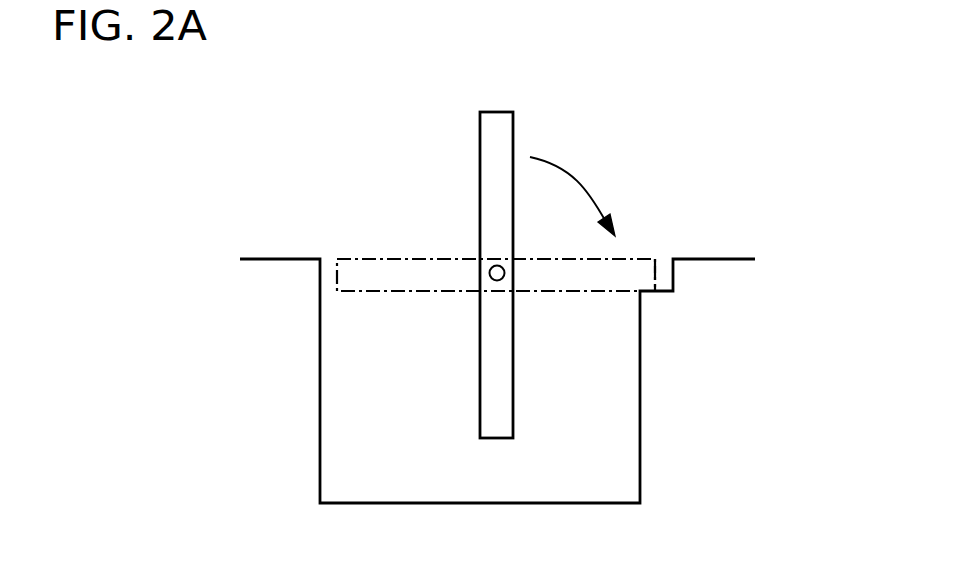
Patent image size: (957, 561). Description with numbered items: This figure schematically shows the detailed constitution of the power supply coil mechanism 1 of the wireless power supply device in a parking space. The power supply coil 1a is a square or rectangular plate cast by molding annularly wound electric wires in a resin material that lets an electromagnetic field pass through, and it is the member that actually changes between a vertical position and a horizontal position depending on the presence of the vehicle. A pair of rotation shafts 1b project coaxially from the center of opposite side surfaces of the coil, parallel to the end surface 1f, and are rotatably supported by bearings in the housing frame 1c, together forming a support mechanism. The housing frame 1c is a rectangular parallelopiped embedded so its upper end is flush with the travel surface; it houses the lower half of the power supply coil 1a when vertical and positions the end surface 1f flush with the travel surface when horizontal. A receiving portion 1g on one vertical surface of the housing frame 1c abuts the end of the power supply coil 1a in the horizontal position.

The power supply coil mechanism 1 is at (702, 113).
The power supply coil 1a is at (575, 258).
The rotation shaft 1b is at (492, 266).
The housing frame 1c is at (641, 368).
The end surface 1f is at (395, 258).
The receiving portion 1g is at (662, 291).